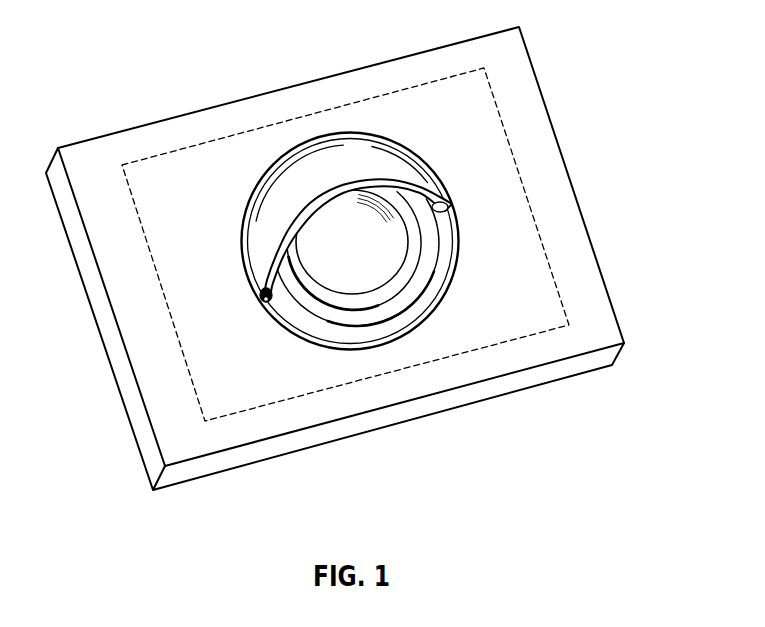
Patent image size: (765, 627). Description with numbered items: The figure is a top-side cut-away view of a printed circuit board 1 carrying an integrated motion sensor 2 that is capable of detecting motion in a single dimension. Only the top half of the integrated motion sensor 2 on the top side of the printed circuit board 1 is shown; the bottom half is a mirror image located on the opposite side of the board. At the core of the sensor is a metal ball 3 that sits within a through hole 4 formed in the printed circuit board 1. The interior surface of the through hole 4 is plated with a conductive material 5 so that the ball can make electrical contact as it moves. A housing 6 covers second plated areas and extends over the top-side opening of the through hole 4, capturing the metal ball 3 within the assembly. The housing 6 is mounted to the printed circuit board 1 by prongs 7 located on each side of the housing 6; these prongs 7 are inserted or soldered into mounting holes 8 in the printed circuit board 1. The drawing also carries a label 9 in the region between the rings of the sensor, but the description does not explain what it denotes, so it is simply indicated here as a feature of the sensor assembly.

The printed circuit board 1 is at (568, 175).
The integrated motion sensor 2 is at (470, 70).
The metal ball 3 is at (397, 247).
The through hole 4 is at (393, 283).
The conductive material 5 is at (380, 302).
The housing 6 is at (280, 193).
The prongs 7 is at (267, 294).
The mounting holes 8 is at (265, 300).
The annular groove 9 is at (300, 320).